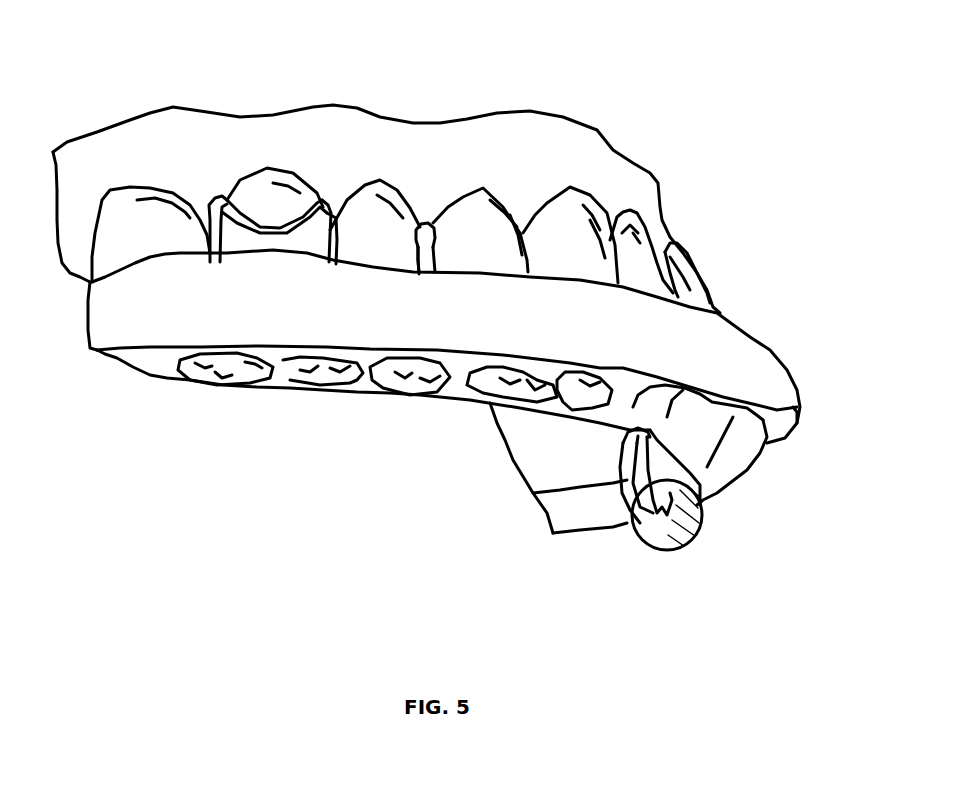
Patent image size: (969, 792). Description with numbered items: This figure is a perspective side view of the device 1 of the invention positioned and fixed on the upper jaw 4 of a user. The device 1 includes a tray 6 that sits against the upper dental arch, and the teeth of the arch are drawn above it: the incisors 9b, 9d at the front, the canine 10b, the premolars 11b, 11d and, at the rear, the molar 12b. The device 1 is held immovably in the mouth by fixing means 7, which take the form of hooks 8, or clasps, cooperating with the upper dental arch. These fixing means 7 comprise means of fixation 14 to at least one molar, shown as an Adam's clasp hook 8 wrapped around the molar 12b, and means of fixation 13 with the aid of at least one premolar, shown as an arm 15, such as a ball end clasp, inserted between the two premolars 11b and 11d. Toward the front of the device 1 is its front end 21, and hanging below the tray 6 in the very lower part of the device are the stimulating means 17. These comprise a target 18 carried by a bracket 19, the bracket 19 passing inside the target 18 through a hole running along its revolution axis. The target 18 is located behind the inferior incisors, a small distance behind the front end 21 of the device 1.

The device 1 is at (770, 350).
The upper jaw 4 is at (200, 148).
The tray 6 is at (738, 426).
The fixing means 7 is at (419, 278).
The hooks 8 is at (272, 210).
The incisor 9b is at (622, 213).
The incisor 9d is at (678, 237).
The canine 10b is at (567, 230).
The premolar 11b is at (465, 218).
The premolar 11d is at (370, 200).
The molar 12b is at (263, 190).
The means of fixation with the aid of at least one premolar 13 is at (427, 268).
The means of fixation to at least one molar 14 is at (214, 270).
The arm 15 is at (426, 224).
The stimulating means 17 is at (686, 522).
The target 18 is at (650, 539).
The bracket 19 is at (619, 505).
The front end of the device 21 is at (800, 405).